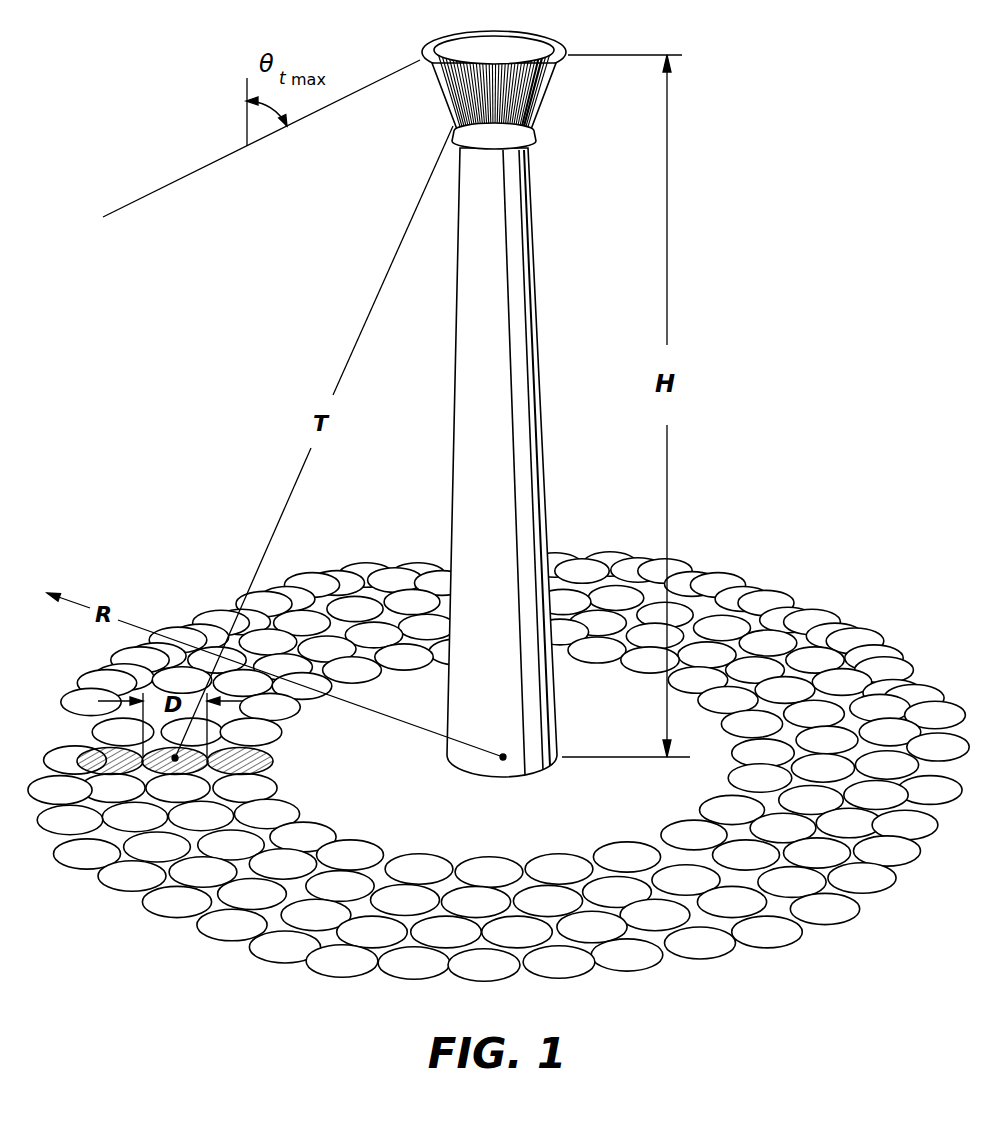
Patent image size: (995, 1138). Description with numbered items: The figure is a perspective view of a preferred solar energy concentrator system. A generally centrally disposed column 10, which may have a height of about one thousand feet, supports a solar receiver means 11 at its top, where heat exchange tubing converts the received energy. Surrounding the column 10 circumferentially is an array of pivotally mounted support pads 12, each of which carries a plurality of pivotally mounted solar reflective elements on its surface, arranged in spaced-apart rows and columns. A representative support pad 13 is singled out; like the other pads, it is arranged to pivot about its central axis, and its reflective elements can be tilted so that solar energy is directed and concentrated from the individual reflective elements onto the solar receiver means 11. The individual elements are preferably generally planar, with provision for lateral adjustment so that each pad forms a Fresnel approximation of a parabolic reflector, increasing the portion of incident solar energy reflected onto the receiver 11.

The column 10 is at (547, 368).
The solar receiver means 11 is at (543, 100).
The support pads 12 is at (757, 557).
The support pad 13 is at (272, 754).